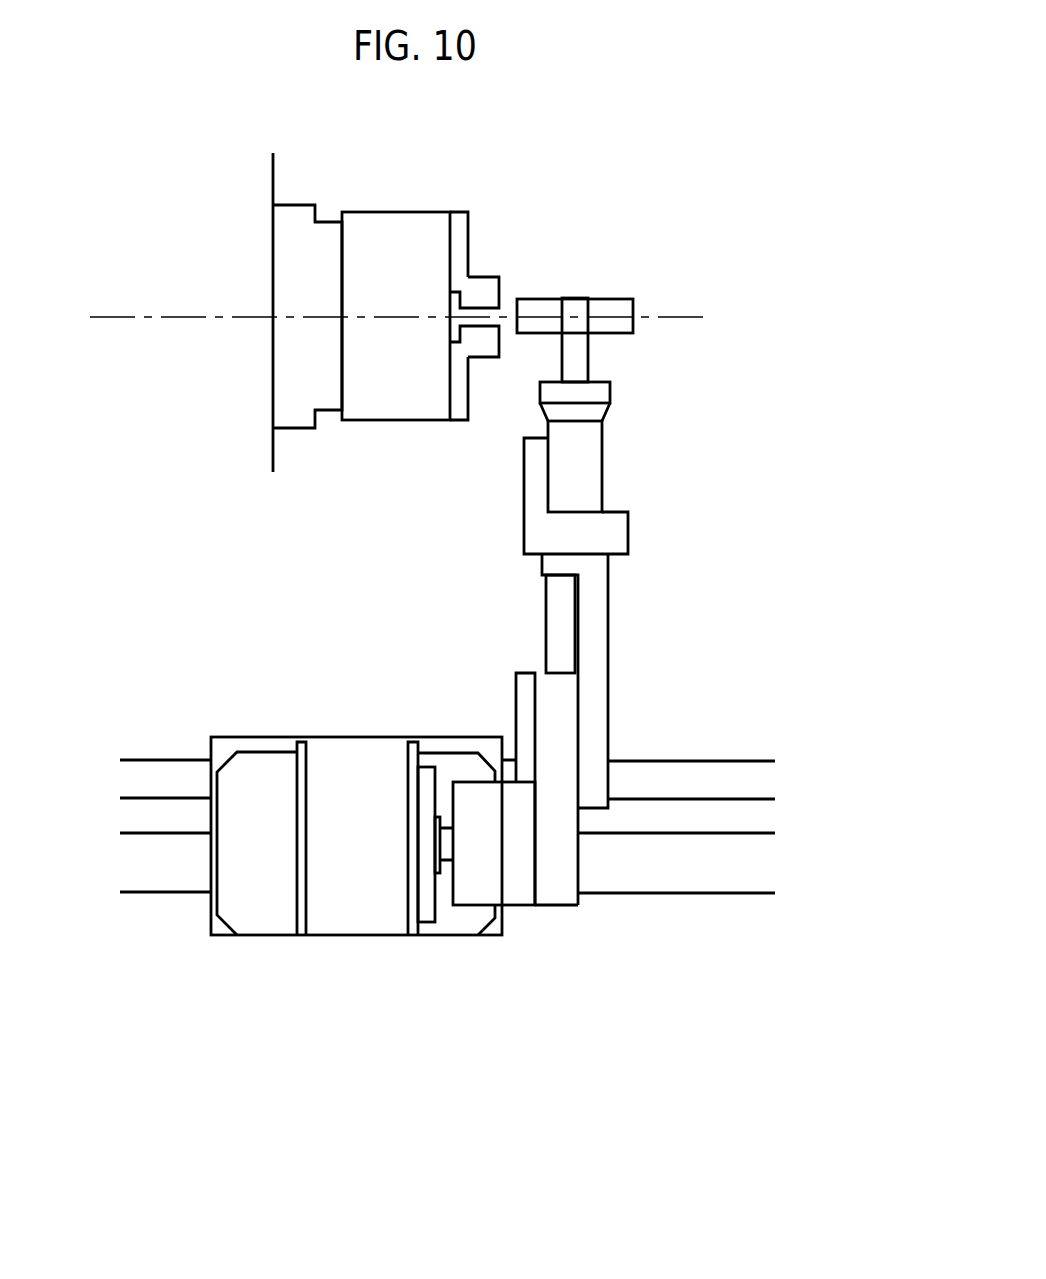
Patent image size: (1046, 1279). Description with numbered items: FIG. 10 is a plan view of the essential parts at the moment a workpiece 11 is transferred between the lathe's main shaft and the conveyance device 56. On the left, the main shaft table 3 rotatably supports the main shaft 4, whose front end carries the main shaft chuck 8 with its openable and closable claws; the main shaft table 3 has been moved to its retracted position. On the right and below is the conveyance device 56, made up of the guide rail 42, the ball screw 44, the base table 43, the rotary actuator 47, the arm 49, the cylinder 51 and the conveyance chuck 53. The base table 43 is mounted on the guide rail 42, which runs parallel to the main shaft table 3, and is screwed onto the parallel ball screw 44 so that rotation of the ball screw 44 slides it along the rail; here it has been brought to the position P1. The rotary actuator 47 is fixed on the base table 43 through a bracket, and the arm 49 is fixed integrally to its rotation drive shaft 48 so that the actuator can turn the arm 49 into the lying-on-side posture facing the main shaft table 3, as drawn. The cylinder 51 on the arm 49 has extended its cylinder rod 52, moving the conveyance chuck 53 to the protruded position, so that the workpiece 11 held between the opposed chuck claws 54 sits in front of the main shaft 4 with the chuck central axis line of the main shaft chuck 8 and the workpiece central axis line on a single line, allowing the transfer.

The main shaft table 3 is at (274, 183).
The main shaft 4 is at (292, 412).
The main shaft chuck 8 is at (476, 229).
The workpiece 11 is at (610, 302).
The chuck claws 54 is at (577, 357).
The conveyance chuck 53 is at (590, 474).
The cylinder rod 52 is at (560, 605).
The arm 49 is at (522, 724).
The cylinder 51 is at (550, 882).
The ball screw 44 is at (683, 873).
The guide rail 42 is at (155, 768).
The base table 43 is at (248, 746).
The conveyance device 56 is at (325, 720).
The rotary actuator 47 is at (347, 918).
The rotation drive shaft 48 is at (447, 842).
The position P1 is at (400, 964).